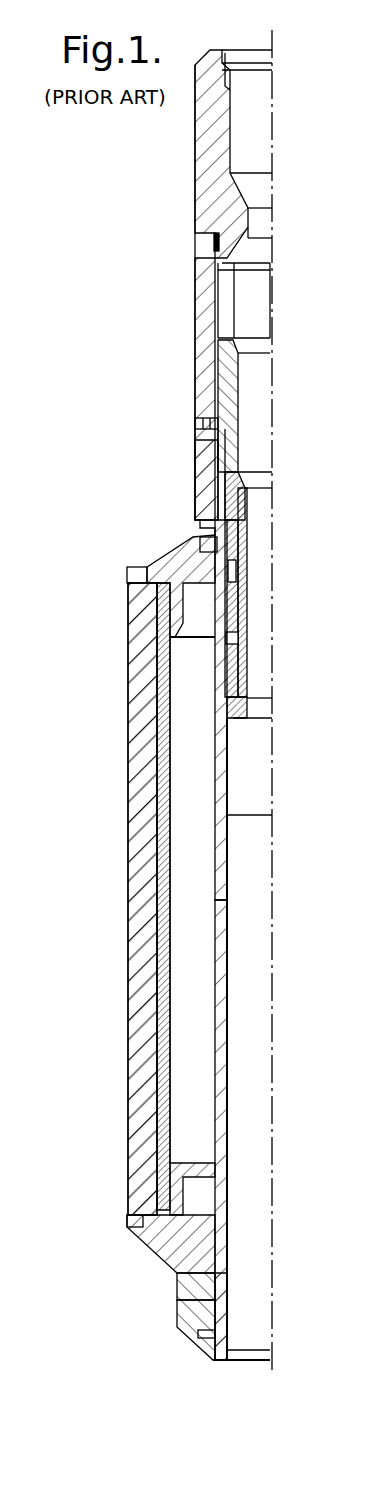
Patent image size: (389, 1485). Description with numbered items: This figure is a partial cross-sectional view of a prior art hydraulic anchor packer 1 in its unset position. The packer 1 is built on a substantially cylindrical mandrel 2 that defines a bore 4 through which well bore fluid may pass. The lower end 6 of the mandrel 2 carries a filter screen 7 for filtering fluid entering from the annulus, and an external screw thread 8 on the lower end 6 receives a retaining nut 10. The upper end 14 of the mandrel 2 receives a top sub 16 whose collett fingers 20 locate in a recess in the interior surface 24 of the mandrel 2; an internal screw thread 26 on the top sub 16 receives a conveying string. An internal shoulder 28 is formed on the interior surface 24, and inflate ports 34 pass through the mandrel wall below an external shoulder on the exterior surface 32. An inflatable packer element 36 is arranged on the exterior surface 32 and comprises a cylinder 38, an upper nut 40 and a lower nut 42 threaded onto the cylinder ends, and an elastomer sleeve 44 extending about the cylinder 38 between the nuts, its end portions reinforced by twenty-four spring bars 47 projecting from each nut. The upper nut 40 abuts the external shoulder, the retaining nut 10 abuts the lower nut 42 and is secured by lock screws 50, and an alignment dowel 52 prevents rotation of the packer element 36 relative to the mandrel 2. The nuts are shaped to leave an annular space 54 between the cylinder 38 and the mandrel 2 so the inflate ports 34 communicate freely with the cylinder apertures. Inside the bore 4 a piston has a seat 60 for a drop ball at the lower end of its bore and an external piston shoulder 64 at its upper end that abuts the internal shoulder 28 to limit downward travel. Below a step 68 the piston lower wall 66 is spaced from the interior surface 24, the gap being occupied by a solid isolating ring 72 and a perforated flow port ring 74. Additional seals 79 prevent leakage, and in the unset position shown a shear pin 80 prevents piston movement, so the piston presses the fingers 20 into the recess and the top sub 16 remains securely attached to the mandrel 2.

The packer 1 is at (292, 158).
The mandrel 2 is at (205, 354).
The bore 4 is at (255, 1183).
The lower end 6 is at (224, 1294).
The filter screen 7 is at (253, 1348).
The external screw thread 8 is at (210, 1283).
The retaining nut 10 is at (190, 1306).
The upper end 14 is at (208, 297).
The top sub 16 is at (205, 118).
The fingers 20 is at (215, 372).
The interior surface 24 is at (214, 462).
The internal screw thread 26 is at (242, 82).
The internal shoulder 28 is at (220, 500).
The exterior surface 32 is at (222, 1022).
The inflate ports 34 is at (211, 645).
The inflatable packer element 36 is at (127, 703).
The cylinder 38 is at (165, 1087).
The upper nut 40 is at (175, 558).
The lower nut 42 is at (193, 1243).
The elastomer sleeve 44 is at (128, 913).
The spring bars 47 is at (130, 578).
The lock screws 50 is at (203, 1334).
The alignment dowel 52 is at (200, 538).
The annular space 54 is at (197, 882).
The seat 60 is at (255, 700).
The external piston shoulder 64 is at (232, 446).
The lower wall 66 is at (242, 610).
The step 68 is at (240, 537).
The isolating ring 72 is at (238, 575).
The flow port ring 74 is at (225, 640).
The seals 79 is at (213, 248).
The shear pin 80 is at (228, 428).